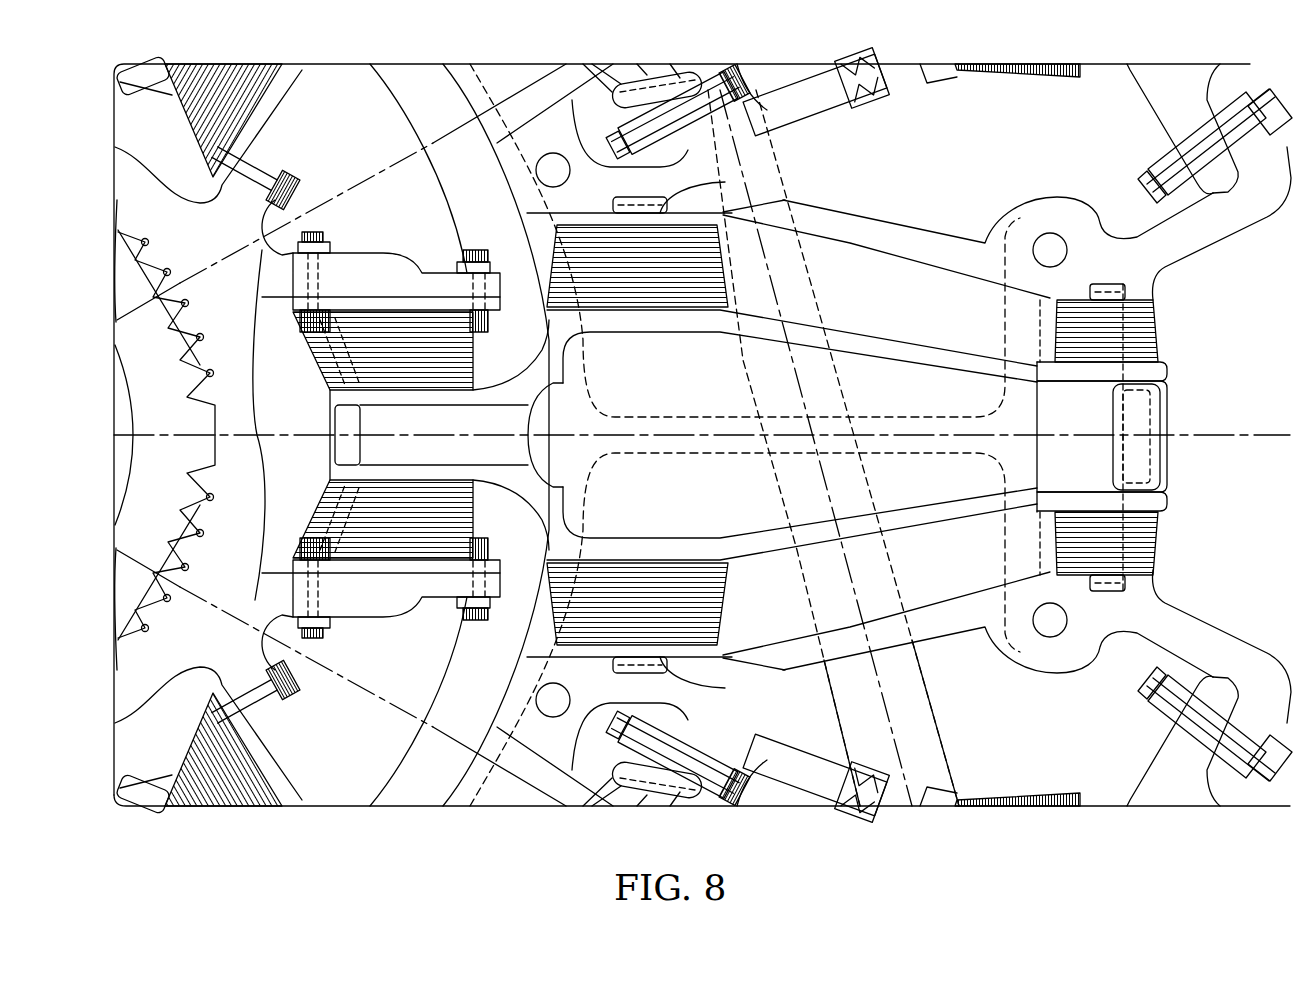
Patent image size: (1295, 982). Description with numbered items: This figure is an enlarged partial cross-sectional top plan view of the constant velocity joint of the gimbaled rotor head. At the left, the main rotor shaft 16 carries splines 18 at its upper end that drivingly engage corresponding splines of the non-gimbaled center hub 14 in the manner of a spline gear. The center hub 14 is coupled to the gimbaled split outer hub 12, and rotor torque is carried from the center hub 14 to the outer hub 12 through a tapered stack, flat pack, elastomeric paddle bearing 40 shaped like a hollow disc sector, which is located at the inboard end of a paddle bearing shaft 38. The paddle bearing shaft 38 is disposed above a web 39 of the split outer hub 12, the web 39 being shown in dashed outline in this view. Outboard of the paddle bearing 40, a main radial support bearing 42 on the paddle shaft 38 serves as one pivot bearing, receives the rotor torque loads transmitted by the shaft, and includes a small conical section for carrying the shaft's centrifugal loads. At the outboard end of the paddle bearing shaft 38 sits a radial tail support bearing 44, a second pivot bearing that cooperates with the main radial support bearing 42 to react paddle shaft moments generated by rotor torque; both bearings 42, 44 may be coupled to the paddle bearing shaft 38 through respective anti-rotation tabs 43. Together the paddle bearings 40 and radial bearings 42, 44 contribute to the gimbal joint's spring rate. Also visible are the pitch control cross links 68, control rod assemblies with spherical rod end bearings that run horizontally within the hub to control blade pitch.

The split outer hub 12 is at (512, 685).
The center hub 14 is at (242, 467).
The main rotor shaft 16 is at (205, 520).
The splines 18 is at (193, 330).
The paddle bearing shaft 38 is at (1087, 500).
The web 39 is at (886, 437).
The paddle bearing 40 is at (395, 560).
The main radial support bearing 42 is at (690, 180).
The anti-rotation tabs 43 is at (667, 668).
The radial tail support bearing 44 is at (1153, 338).
The pitch control cross links 68 is at (935, 717).